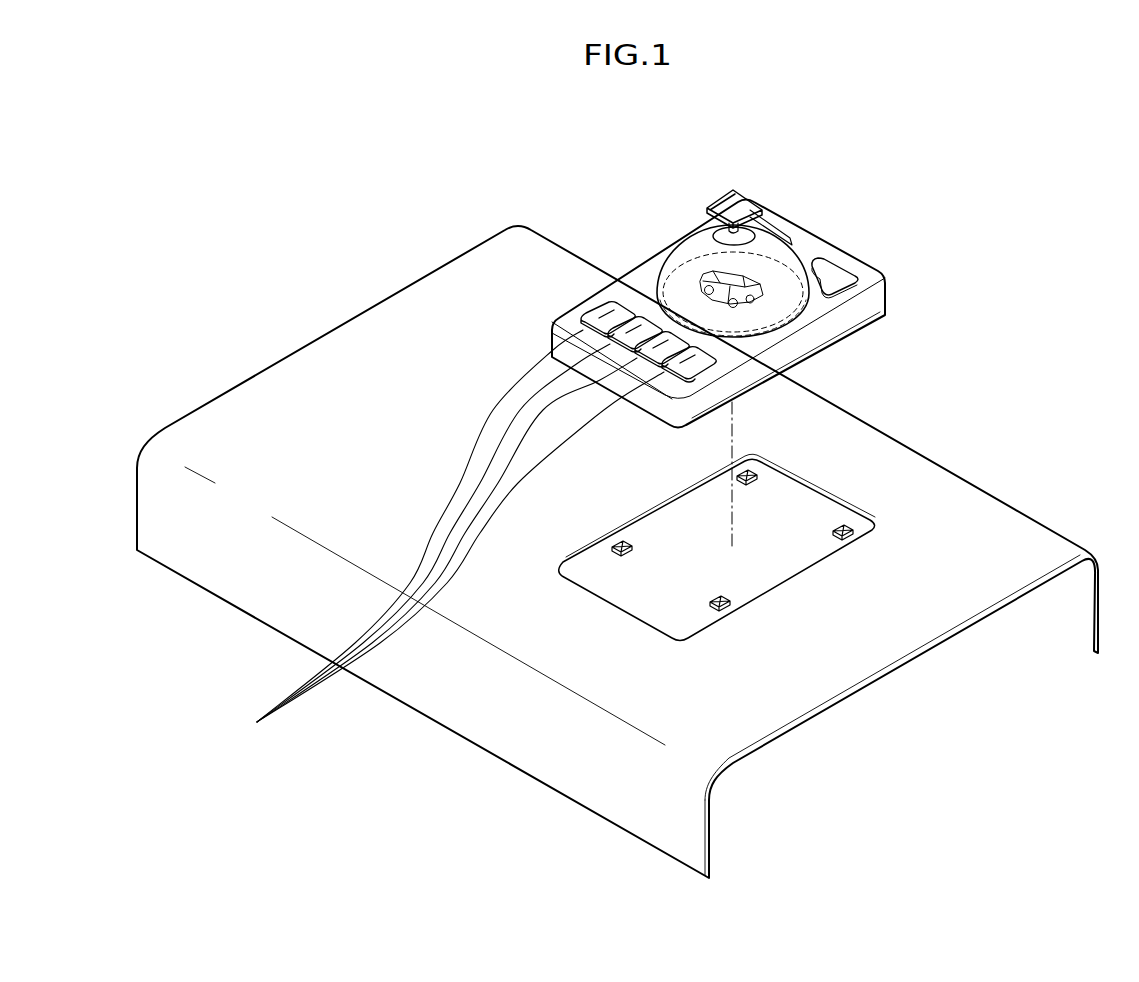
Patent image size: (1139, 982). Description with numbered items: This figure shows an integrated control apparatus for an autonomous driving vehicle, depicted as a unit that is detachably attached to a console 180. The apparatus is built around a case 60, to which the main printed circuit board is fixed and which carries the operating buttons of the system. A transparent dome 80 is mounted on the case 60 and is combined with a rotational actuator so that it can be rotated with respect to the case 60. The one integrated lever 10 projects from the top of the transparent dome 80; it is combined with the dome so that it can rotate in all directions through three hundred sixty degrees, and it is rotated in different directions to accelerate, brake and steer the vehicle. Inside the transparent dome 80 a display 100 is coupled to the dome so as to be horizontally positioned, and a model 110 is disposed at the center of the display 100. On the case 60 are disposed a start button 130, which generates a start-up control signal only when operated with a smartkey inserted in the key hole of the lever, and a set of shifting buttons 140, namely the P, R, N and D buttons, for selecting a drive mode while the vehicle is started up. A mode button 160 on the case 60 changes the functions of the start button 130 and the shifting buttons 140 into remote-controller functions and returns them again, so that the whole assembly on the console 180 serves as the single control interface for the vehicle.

The integrated lever 10 is at (742, 201).
The case 60 is at (878, 306).
The transparent dome 80 is at (715, 278).
The display 100 is at (633, 252).
The model 110 is at (648, 252).
The start button 130 is at (838, 270).
The shifting buttons 140 is at (435, 538).
The mode button 160 is at (791, 243).
The console 180 is at (993, 520).